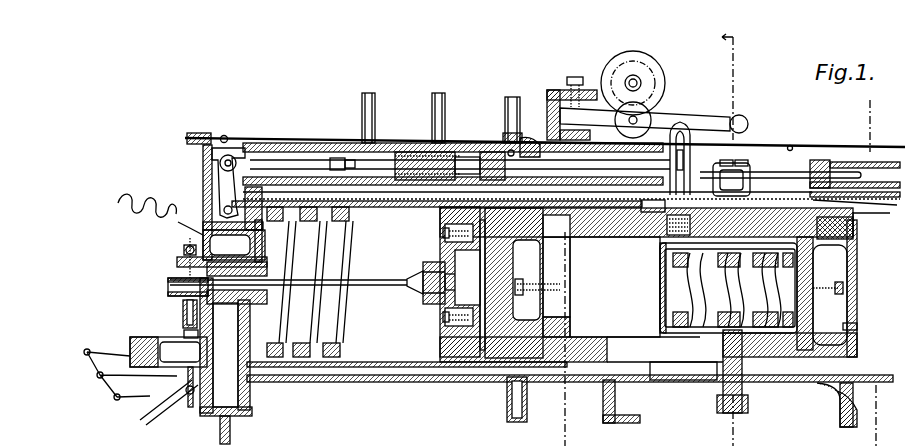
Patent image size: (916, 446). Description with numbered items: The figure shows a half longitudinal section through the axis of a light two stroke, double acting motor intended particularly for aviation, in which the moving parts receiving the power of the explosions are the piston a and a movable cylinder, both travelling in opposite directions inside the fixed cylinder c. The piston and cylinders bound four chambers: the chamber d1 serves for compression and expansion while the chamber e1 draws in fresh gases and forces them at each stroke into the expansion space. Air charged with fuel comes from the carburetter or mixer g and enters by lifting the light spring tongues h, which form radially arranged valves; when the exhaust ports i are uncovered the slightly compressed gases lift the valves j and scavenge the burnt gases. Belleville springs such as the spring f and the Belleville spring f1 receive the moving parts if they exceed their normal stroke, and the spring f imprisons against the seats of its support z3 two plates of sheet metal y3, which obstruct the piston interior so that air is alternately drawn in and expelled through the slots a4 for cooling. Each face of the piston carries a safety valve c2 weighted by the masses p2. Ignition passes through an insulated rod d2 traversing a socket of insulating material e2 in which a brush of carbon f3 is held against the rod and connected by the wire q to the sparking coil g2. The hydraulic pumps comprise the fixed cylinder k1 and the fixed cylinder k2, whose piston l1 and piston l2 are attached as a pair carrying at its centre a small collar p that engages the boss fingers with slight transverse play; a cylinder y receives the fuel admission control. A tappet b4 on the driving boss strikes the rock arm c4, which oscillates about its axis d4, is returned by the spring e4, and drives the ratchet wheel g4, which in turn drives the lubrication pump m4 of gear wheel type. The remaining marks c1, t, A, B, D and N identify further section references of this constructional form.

The wire q is at (132, 204).
The spring tongues h is at (185, 224).
The brush of carbon f3 is at (182, 266).
The socket of insulating material e2 is at (180, 288).
The carburetter or mixer g is at (225, 352).
The chamber e1 is at (370, 256).
The insulated rod d2 is at (317, 285).
The Belleville spring f1 is at (306, 343).
The fixed cylinder c is at (370, 368).
The valves j is at (474, 322).
The chamber d1 is at (477, 285).
The bearing c1 is at (512, 287).
The masses p2 is at (560, 318).
The piston a is at (597, 228).
The slots a4 is at (631, 343).
The support z3 is at (663, 250).
The plates of sheet metal y3 is at (663, 282).
The spring f is at (733, 290).
The cylinder y is at (787, 292).
The safety valve c2 is at (843, 290).
The exhaust ports i is at (670, 364).
The piston l2 is at (503, 140).
The fixed cylinder k2 is at (538, 140).
The spring e4 is at (552, 110).
The ratchet wheel g4 is at (628, 118).
The lubrication pump m4 is at (648, 70).
The axis d4 is at (703, 116).
The tappet b4 is at (683, 128).
The sparking coil g2 is at (733, 80).
The rock arm c4 is at (745, 120).
The piston l1 is at (760, 170).
The rod t is at (810, 145).
The fixed cylinder k1 is at (860, 160).
The small collar p is at (685, 168).
The section line A is at (719, 443).
The section line B is at (883, 269).
The direction arrow D is at (585, 208).
The section line N is at (328, 438).